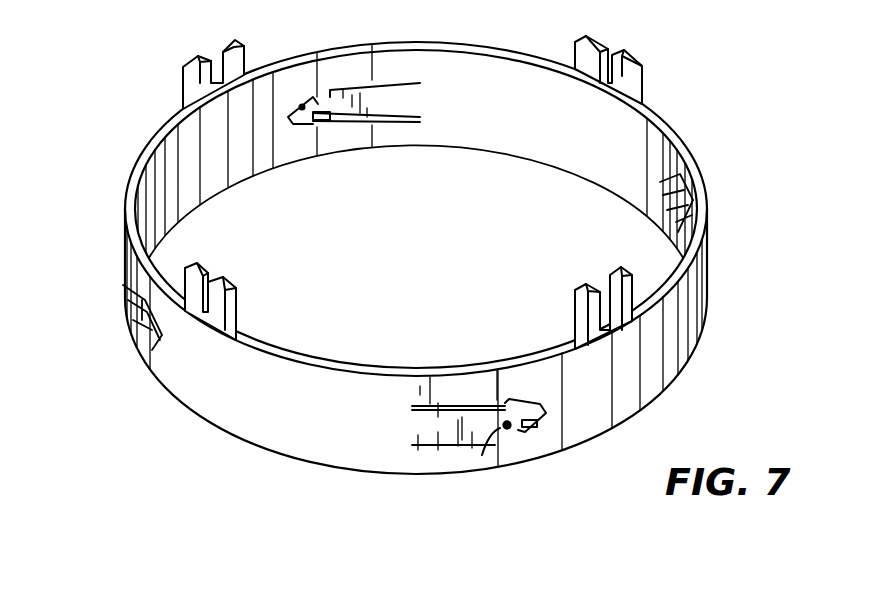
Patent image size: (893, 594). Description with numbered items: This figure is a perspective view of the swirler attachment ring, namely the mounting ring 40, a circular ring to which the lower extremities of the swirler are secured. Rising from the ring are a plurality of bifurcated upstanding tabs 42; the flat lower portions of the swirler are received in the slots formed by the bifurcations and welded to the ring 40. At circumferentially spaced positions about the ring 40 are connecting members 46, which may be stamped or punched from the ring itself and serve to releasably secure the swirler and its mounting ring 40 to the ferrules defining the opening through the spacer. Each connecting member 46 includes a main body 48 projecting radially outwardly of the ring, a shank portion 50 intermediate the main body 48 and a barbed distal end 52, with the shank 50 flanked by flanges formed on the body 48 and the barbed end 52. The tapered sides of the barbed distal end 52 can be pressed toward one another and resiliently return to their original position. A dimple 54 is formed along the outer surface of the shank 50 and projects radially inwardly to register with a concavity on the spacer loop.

The mounting ring 40 is at (124, 195).
The bifurcated upstanding tabs 42 is at (186, 63).
The connecting members 46 is at (431, 412).
The main body 48 is at (438, 447).
The shank portion 50 is at (512, 432).
The barbed distal end 52 is at (537, 436).
The dimple 54 is at (482, 455).